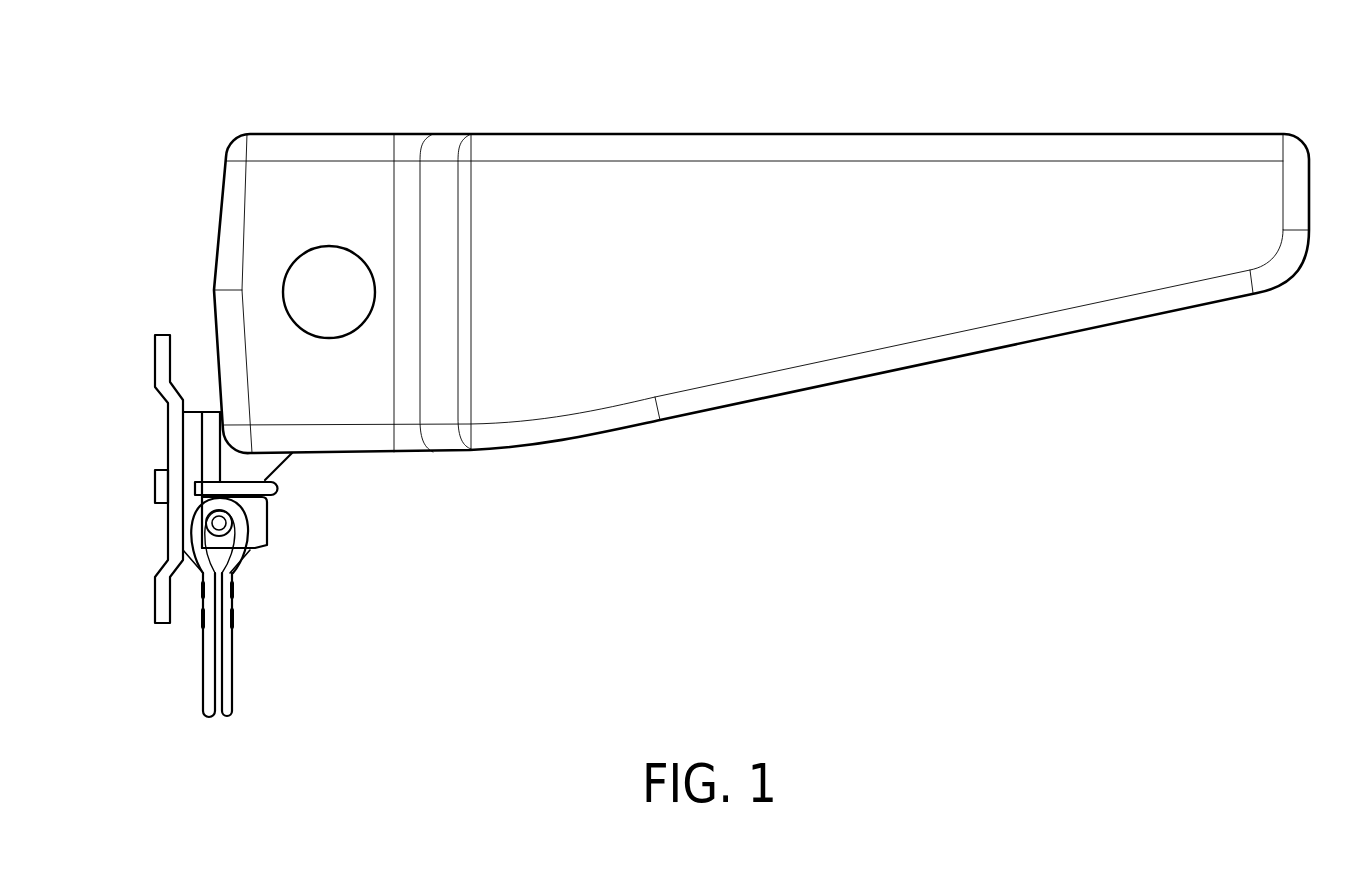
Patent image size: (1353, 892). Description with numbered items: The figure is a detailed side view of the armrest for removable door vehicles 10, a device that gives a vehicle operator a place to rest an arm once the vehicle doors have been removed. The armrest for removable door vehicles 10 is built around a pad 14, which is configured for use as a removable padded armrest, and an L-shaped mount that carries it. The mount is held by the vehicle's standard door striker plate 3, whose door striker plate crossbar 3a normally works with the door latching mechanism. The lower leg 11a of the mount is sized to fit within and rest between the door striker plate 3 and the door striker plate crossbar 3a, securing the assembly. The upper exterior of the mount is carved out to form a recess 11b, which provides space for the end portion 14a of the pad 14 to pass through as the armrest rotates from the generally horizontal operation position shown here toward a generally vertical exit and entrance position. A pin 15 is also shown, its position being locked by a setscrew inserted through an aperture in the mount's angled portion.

The door striker plate 3 is at (212, 502).
The door striker plate crossbar 3a is at (278, 488).
The armrest for removable door vehicles 10 is at (973, 447).
The lower leg 11a is at (257, 527).
The recess 11b is at (192, 344).
The pad 14 is at (773, 228).
The end portion 14a is at (325, 187).
The pin 15 is at (332, 315).